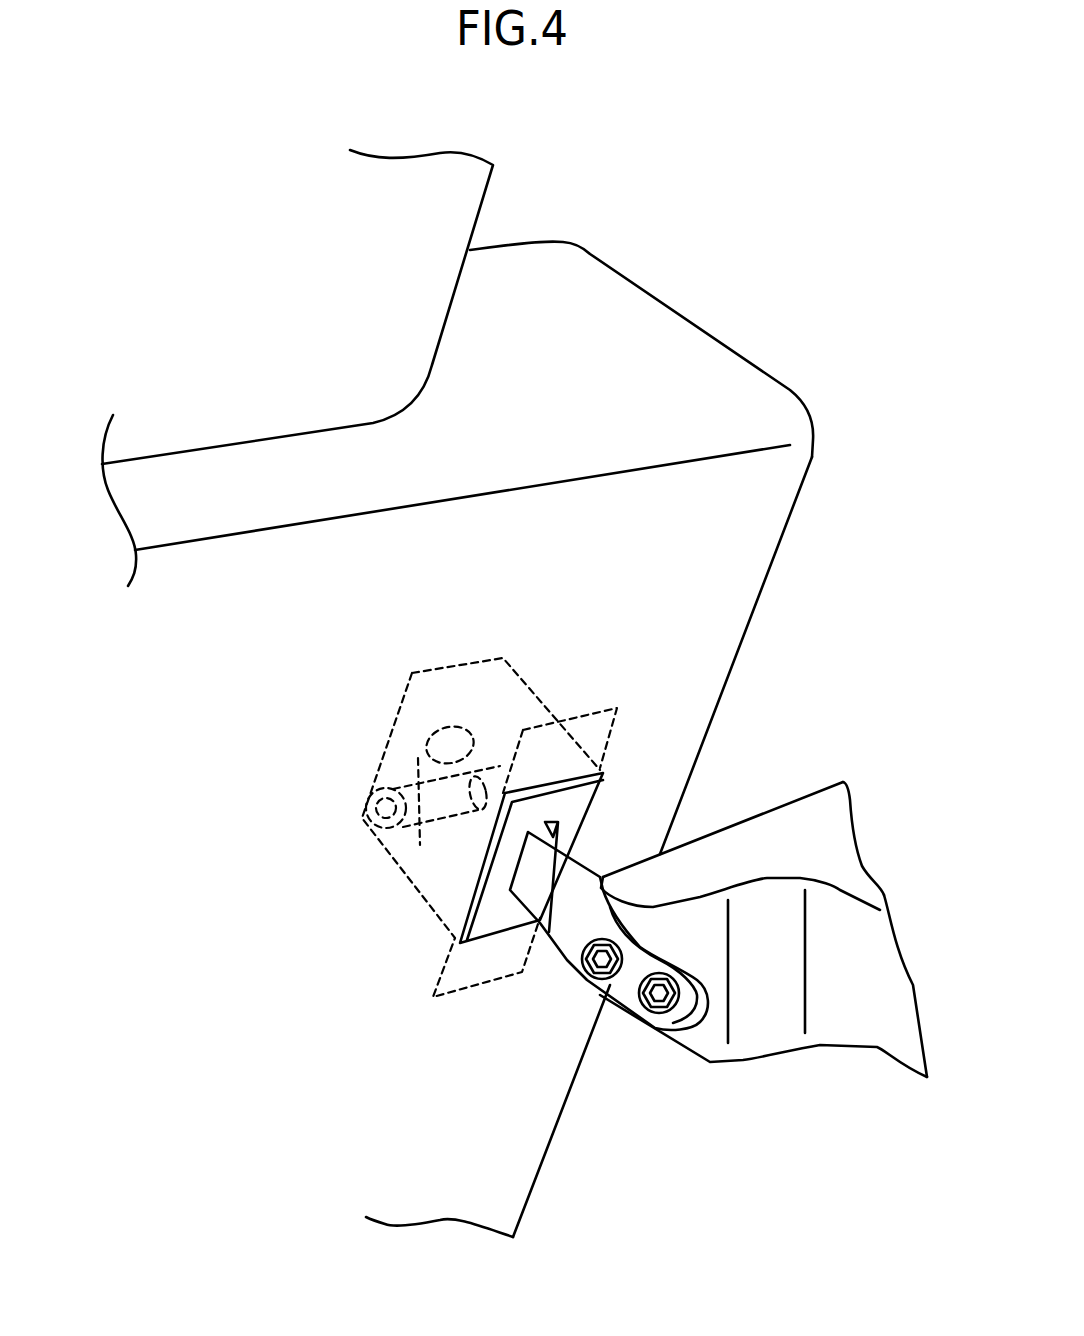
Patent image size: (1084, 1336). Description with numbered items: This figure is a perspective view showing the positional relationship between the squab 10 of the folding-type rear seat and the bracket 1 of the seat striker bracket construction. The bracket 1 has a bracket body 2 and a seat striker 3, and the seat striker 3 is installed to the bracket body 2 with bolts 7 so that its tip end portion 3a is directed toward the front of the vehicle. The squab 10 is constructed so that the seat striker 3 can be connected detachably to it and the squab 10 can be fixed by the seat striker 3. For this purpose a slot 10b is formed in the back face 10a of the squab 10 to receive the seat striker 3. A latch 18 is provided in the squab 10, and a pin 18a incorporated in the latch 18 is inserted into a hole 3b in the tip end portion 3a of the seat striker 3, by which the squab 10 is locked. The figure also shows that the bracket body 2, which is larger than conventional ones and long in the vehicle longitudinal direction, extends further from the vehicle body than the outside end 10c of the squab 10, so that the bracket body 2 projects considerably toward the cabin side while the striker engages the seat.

The squab 10 is at (718, 363).
The back face 10a is at (542, 517).
The slot 10b is at (490, 934).
The outside end 10c is at (753, 610).
The bracket 1 is at (778, 830).
The bracket body 2 is at (883, 1037).
The seat striker 3 is at (577, 947).
The tip end portion 3a is at (420, 760).
The hole 3b is at (475, 735).
The bolts 7 is at (600, 958).
The latch 18 is at (400, 723).
The pin 18a is at (390, 850).